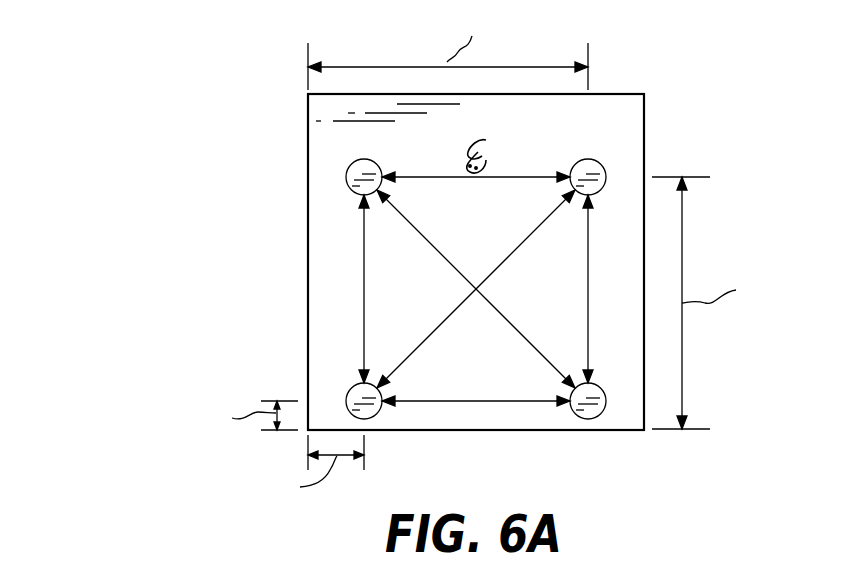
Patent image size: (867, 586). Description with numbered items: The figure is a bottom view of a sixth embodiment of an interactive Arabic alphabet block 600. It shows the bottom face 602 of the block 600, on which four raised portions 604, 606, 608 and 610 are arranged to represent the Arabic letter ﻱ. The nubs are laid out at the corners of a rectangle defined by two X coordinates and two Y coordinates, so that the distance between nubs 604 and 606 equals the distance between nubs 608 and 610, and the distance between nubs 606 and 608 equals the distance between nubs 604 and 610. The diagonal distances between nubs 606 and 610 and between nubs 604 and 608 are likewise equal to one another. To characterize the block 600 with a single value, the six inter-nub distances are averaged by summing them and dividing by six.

The interactive Arabic alphabet block 600 is at (128, 95).
The bottom face 602 is at (578, 132).
The raised portion 604 is at (351, 391).
The raised portion 606 is at (346, 175).
The raised portion 608 is at (600, 163).
The raised portion 610 is at (588, 419).